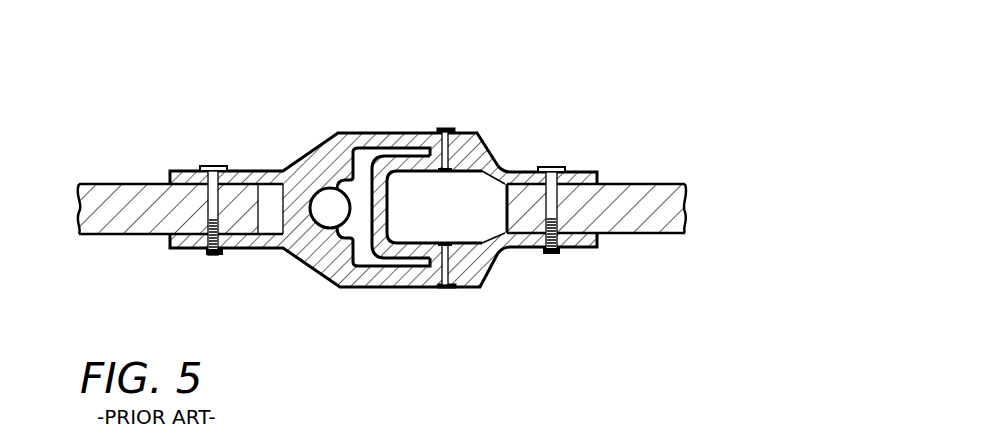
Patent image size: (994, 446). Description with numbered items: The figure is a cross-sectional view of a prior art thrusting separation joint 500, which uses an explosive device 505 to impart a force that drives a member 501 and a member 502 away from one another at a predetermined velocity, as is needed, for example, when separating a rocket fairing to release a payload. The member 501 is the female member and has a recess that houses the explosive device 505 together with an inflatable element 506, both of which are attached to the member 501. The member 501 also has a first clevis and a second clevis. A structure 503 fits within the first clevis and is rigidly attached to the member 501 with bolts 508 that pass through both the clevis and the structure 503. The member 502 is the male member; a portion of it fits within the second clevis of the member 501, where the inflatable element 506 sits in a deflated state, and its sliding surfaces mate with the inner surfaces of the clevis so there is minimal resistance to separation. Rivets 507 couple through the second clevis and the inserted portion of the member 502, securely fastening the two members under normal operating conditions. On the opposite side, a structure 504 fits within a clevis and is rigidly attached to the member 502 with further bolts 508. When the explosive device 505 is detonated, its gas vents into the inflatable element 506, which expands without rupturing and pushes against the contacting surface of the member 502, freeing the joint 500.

The thrusting separation joint 500 is at (359, 366).
The member 501 is at (326, 264).
The member 502 is at (488, 260).
The structure 503 is at (120, 236).
The structure 504 is at (655, 234).
The explosive device 505 is at (322, 199).
The inflatable element 506 is at (370, 153).
The rivets 507 is at (445, 126).
The bolts 508 is at (217, 152).